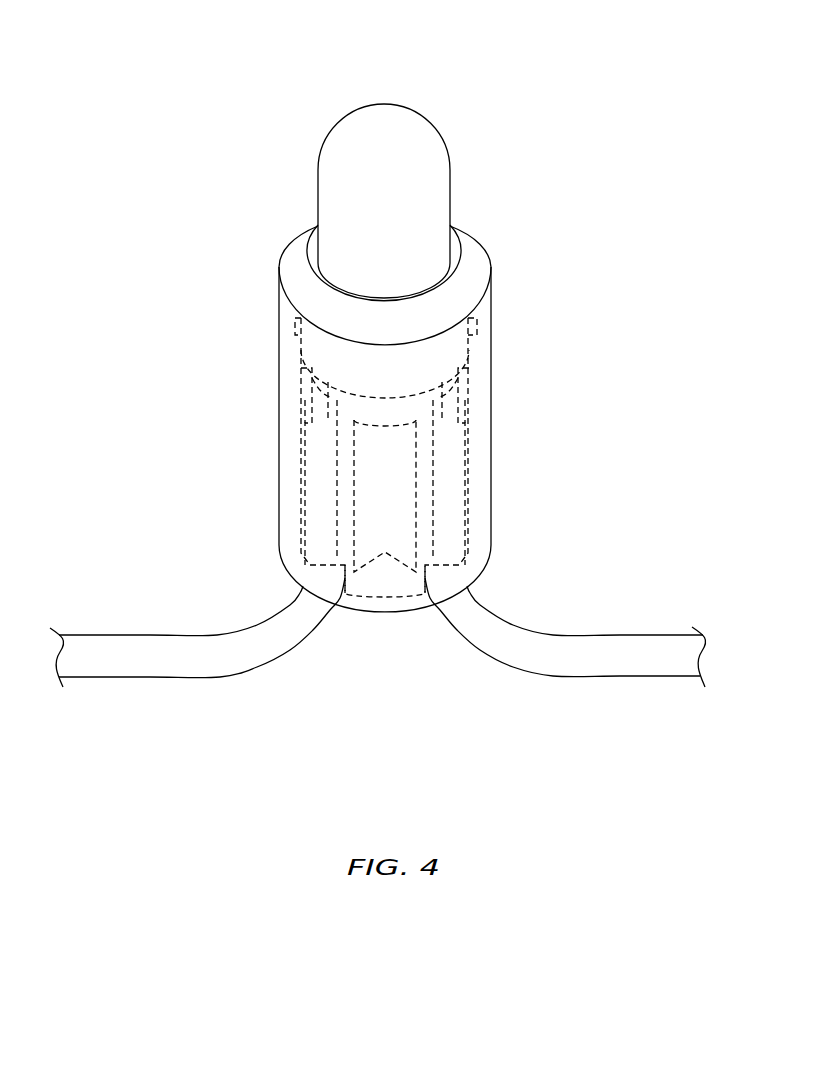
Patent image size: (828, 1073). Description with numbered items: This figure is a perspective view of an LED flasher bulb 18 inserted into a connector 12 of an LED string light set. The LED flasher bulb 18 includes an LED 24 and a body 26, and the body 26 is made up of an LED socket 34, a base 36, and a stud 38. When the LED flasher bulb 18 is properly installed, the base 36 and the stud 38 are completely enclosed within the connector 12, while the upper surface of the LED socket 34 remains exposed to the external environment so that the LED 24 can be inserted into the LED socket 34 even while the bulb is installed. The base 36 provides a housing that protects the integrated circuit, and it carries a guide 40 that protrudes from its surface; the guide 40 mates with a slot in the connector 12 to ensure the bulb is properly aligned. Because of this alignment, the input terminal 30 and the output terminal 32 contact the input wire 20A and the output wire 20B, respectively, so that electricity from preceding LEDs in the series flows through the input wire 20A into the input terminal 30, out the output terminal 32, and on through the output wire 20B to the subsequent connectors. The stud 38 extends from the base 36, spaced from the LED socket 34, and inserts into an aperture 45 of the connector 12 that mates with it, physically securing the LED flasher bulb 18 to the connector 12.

The connector 12 is at (492, 505).
The LED flasher bulb 18 is at (294, 78).
The input wire 20A is at (300, 401).
The output wire 20B is at (468, 401).
The LED 24 is at (428, 146).
The body 26 is at (404, 279).
The input terminal 30 is at (305, 381).
The output terminal 32 is at (455, 382).
The LED socket 34 is at (297, 245).
The base 36 is at (301, 334).
The stud 38 is at (343, 468).
The guide 40 is at (479, 334).
The aperture 45 is at (383, 574).